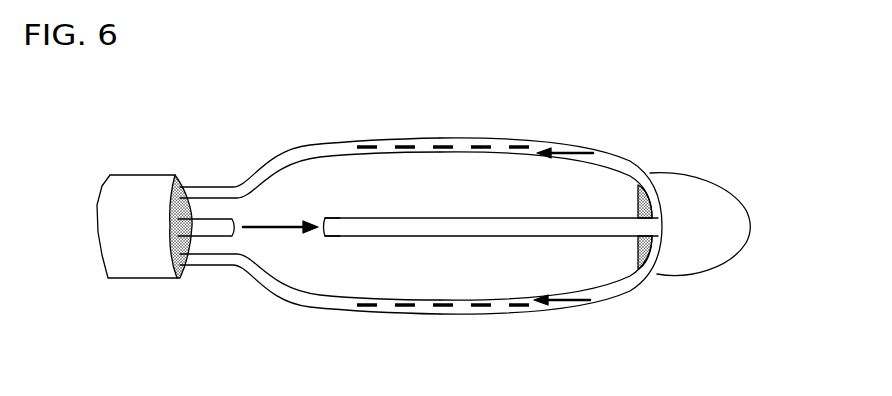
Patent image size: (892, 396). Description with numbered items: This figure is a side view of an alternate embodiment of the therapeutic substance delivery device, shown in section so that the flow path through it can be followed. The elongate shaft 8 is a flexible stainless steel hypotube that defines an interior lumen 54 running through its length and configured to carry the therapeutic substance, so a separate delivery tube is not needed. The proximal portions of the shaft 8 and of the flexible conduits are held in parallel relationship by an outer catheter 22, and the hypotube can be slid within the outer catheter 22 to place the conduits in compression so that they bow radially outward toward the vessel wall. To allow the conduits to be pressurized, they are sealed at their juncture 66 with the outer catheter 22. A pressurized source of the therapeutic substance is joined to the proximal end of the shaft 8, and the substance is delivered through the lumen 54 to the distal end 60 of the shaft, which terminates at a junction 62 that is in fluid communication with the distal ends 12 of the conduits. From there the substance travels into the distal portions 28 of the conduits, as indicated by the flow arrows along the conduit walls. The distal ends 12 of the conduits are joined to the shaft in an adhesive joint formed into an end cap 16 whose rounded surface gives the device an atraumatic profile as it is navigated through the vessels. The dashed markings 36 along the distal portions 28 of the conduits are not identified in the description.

The shaft 8 is at (412, 238).
The distal end of conduit 12 is at (660, 213).
The end cap 16 is at (713, 243).
The outer catheter 22 is at (125, 233).
The distal portion of conduit 28 is at (537, 143).
The heating coating 36 is at (442, 137).
The interior lumen 54 is at (327, 236).
The distal end of hypotube shaft 60 is at (640, 236).
The junction 62 is at (653, 212).
The juncture seal 66 is at (185, 176).